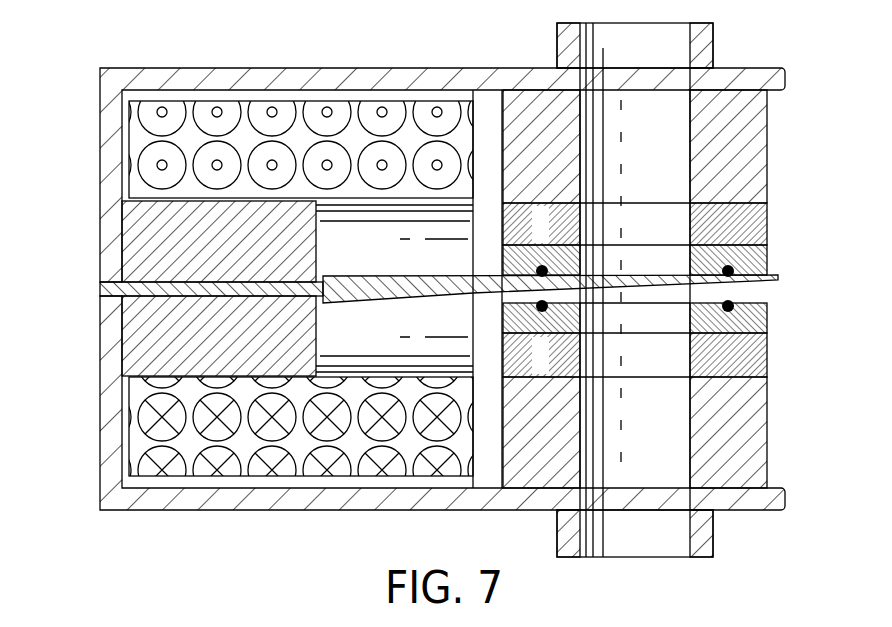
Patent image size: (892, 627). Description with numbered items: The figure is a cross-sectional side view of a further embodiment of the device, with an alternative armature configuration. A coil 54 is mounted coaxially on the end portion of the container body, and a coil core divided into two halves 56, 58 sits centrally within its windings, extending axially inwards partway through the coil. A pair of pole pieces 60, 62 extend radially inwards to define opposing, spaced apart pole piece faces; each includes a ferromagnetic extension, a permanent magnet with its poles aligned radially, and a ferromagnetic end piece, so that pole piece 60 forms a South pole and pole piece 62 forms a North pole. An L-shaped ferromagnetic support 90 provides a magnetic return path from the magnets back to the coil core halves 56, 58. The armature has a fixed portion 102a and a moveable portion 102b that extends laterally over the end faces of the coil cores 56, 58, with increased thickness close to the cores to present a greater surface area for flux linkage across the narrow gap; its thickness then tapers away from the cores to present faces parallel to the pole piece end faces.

The L-shaped support 90 is at (330, 78).
The coil 54 is at (148, 155).
The coil core half 56 is at (133, 222).
The coil core half 58 is at (130, 333).
The fixed portion of the armature 102a is at (133, 266).
The moveable portion of the armature 102b is at (362, 296).
The pole piece 60 is at (780, 142).
The pole piece 62 is at (780, 416).